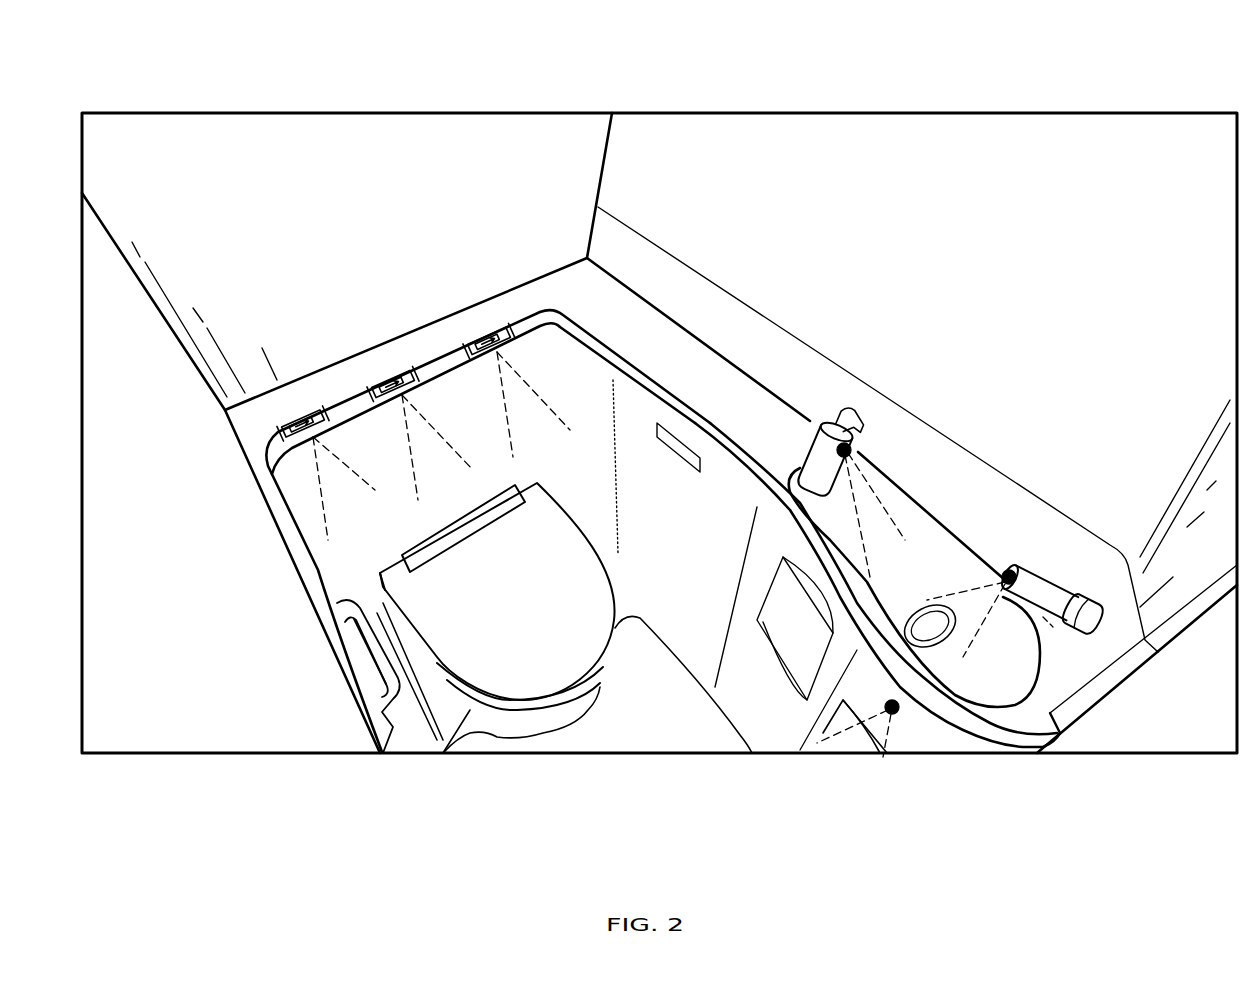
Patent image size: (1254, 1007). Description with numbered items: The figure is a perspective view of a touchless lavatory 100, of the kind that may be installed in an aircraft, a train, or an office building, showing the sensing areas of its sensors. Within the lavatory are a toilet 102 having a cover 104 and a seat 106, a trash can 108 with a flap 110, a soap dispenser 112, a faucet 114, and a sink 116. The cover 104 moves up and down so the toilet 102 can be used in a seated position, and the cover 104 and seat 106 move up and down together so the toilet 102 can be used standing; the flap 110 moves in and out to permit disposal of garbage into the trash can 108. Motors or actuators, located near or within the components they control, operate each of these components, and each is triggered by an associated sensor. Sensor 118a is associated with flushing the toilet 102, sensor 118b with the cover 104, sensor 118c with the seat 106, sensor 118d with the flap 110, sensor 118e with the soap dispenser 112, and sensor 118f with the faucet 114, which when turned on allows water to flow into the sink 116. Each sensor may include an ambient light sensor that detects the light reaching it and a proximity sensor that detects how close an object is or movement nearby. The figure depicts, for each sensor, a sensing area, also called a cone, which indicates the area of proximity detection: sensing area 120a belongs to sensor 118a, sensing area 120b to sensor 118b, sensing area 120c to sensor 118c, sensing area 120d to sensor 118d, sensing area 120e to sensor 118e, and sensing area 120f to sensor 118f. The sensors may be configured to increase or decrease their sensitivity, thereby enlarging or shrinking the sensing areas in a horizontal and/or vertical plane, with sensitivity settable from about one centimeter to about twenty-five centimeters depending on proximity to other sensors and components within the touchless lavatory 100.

The touchless lavatory 100 is at (196, 82).
The toilet 102 is at (470, 710).
The cover 104 is at (497, 713).
The seat 106 is at (537, 650).
The trash can 108 is at (837, 772).
The flap 110 is at (854, 767).
The soap dispenser 112 is at (840, 410).
The faucet 114 is at (1077, 580).
The sink 116 is at (983, 530).
The sensor 118a is at (300, 418).
The sensor 118b is at (390, 378).
The sensor 118c is at (487, 333).
The sensor 118d is at (895, 712).
The sensor 118e is at (850, 449).
The sensor 118f is at (1013, 572).
The sensing area 120a is at (303, 493).
The sensing area 120b is at (433, 410).
The sensing area 120c is at (530, 368).
The sensing area 120d is at (890, 767).
The sensing area 120e is at (883, 487).
The sensing area 120f is at (957, 583).